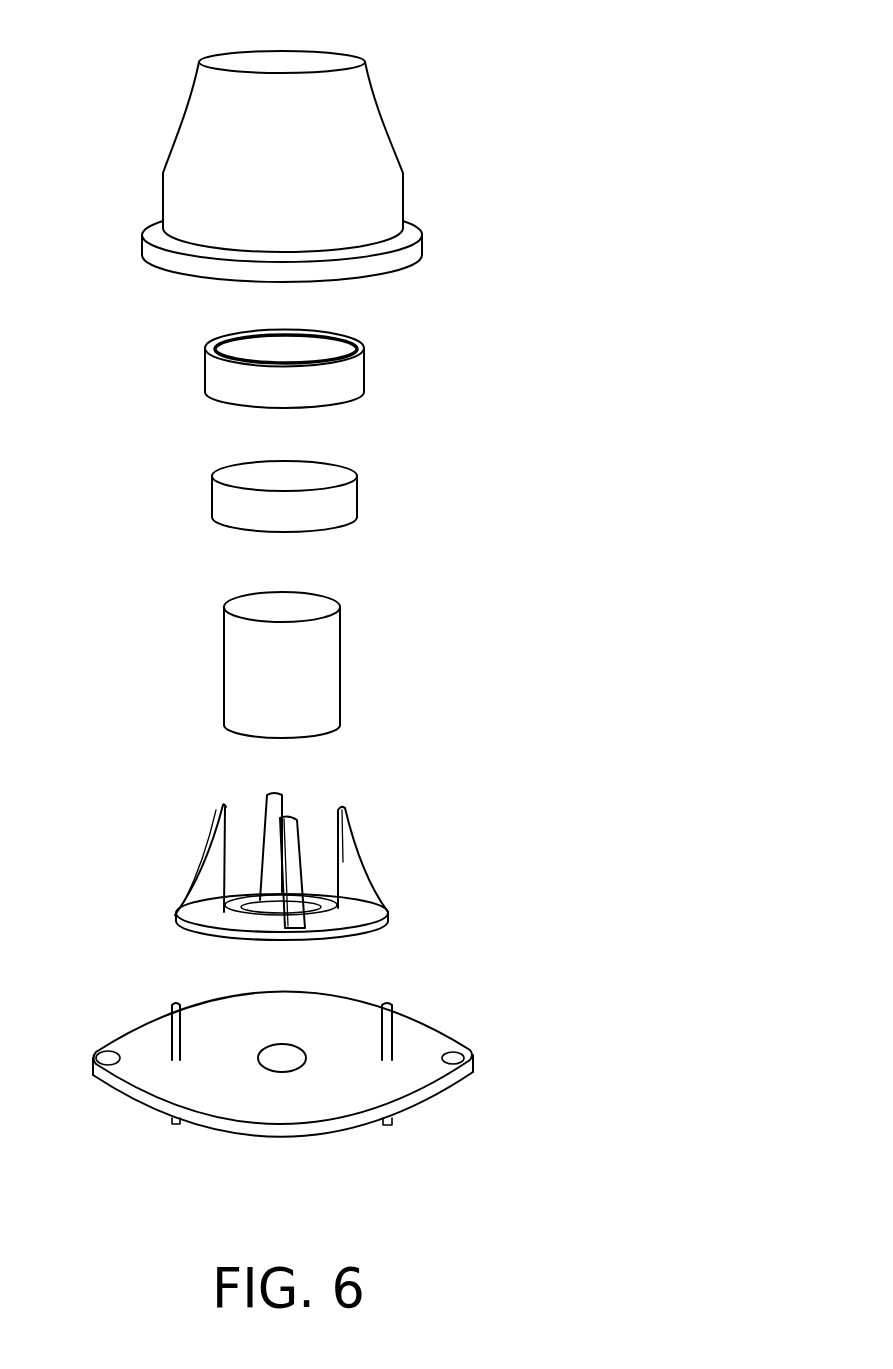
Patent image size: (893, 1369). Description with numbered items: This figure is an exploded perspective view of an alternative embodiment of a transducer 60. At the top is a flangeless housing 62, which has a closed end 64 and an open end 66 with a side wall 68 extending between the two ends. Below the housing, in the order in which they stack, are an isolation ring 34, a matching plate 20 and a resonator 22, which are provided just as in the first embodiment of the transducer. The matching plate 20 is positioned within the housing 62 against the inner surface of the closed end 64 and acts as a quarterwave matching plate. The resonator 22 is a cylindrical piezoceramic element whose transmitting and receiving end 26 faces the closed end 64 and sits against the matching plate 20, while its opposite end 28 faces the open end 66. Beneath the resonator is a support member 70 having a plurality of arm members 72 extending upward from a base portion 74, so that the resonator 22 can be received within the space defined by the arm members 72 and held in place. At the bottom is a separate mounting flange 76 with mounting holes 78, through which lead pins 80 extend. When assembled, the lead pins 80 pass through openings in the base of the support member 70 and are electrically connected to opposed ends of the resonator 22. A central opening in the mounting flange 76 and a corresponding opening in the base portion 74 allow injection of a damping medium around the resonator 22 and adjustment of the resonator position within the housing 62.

The transducer 60 is at (508, 292).
The flangeless housing 62 is at (405, 123).
The closed end 64 is at (330, 72).
The open end 66 is at (163, 282).
The side wall 68 is at (192, 137).
The isolation ring 34 is at (364, 362).
The matching plate 20 is at (357, 491).
The resonator 22 is at (328, 668).
The transmitting and receiving end 26 is at (238, 606).
The opposite end 28 is at (238, 734).
The support member 70 is at (382, 890).
The arm members 72 is at (210, 870).
The base portion 74 is at (377, 923).
The mounting flange 76 is at (437, 1093).
The mounting holes 78 is at (100, 1052).
The lead pins 80 is at (172, 1008).